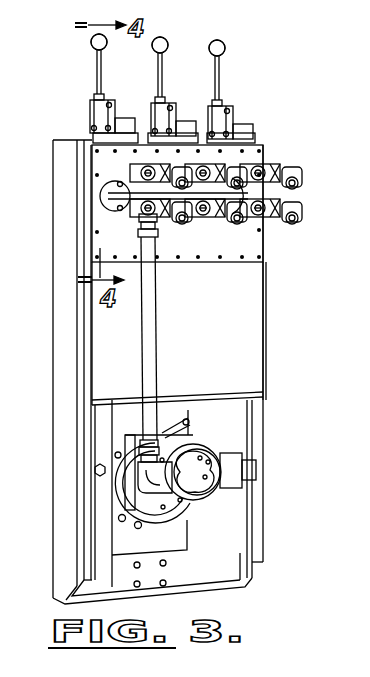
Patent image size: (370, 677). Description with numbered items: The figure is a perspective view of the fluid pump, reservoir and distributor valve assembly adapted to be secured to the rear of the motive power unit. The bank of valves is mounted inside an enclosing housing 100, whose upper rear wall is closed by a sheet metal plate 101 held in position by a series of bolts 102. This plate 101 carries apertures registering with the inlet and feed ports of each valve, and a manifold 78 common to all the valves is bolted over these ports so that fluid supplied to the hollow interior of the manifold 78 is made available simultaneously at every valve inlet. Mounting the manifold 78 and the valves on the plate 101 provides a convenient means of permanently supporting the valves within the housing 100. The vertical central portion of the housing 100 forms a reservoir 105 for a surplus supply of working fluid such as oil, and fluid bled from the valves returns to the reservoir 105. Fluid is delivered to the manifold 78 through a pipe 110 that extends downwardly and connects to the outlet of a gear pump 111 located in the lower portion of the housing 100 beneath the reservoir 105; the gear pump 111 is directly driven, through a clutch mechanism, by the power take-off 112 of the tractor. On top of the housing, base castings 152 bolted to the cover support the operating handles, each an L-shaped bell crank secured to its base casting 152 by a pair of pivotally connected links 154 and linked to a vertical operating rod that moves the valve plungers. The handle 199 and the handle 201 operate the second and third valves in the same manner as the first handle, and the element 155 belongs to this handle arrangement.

The manifold 78 is at (100, 196).
The housing 100 is at (262, 412).
The sheet metal plate 101 is at (263, 241).
The bolts 102 is at (263, 256).
The reservoir 105 is at (228, 311).
The pipe 110 is at (147, 353).
The gear pump 111 is at (195, 437).
The power take-off 112 is at (170, 513).
The base casting 152 is at (93, 136).
The pivotally connected links 154 is at (258, 92).
The lever 155 is at (97, 60).
The handle 199 is at (163, 73).
The handle 201 is at (220, 72).